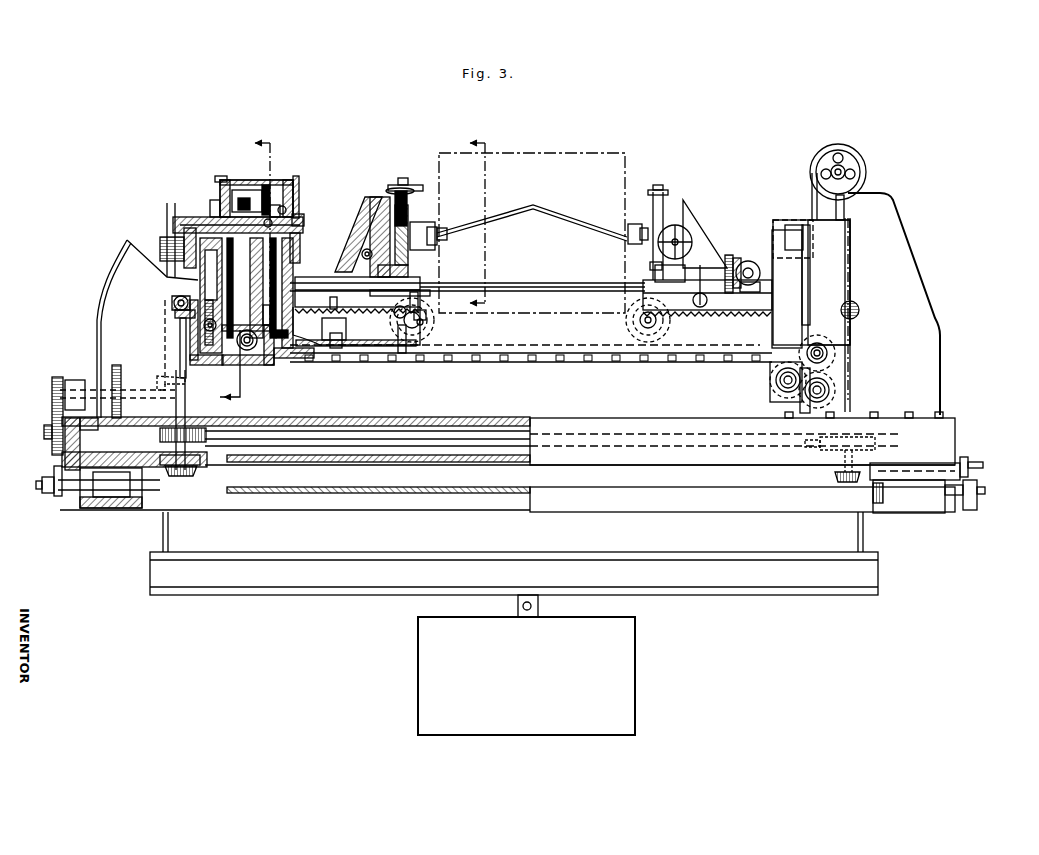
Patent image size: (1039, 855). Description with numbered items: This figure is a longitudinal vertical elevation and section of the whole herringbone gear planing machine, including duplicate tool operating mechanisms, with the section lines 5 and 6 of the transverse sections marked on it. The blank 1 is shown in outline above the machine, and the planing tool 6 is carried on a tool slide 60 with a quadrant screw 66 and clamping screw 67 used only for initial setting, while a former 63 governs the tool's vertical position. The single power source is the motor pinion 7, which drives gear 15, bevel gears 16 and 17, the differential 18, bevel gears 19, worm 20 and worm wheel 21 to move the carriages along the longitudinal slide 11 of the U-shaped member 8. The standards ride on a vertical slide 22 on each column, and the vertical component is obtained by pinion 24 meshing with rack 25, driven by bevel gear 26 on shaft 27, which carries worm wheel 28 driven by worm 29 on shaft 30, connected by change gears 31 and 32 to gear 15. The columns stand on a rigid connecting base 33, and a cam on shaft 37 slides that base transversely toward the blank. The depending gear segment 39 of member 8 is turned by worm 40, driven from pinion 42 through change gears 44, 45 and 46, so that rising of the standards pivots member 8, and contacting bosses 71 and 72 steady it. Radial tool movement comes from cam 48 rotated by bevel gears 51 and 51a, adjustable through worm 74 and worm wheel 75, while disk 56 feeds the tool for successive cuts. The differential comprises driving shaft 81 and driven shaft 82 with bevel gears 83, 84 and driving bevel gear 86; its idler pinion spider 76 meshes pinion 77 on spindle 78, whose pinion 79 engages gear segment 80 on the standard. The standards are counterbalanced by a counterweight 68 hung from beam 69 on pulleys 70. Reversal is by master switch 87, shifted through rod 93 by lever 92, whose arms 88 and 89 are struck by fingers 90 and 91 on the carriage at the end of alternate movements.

The blank 1 is at (500, 165).
The slide 5 is at (242, 268).
The planing tool 6 is at (445, 226).
The pinion 7 is at (100, 405).
The base 8 is at (779, 289).
The longitudinal slide 11 is at (448, 283).
The gear 15 is at (110, 370).
The bevel gear 16 is at (158, 378).
The bevel gear 17 is at (190, 232).
The differential gearing 18 is at (296, 205).
The bevel gears 19 is at (283, 358).
The worm 20 is at (414, 330).
The worm wheel 21 is at (430, 330).
The vertical slide 22 is at (812, 205).
The pinion 24 is at (174, 300).
The rack 25 is at (182, 325).
The bevel gear 26 is at (175, 313).
The shaft 27 is at (176, 340).
The worm wheel 28 is at (178, 439).
The worm 29 is at (190, 440).
The shaft 30 is at (278, 440).
The change gear 31 is at (52, 385).
The change gear 32 is at (45, 436).
The connecting base 33 is at (545, 421).
The shaft 37 is at (118, 488).
The gear segment 39 is at (265, 350).
The worm 40 is at (248, 350).
The pinion 42 is at (210, 330).
The change gear 44 is at (818, 342).
The change gear 45 is at (805, 400).
The change gear 46 is at (775, 383).
The cam 48 is at (682, 282).
The bevel gear 51 is at (730, 256).
The bevel gear 51a is at (760, 274).
The disk 56 is at (706, 302).
The tool slide 60 is at (365, 240).
The former 63 is at (652, 266).
The quadrant screw 66 is at (404, 195).
The clamping screw 67 is at (433, 228).
The counterweight 68 is at (526, 665).
The beam 69 is at (514, 553).
The pulleys 70 is at (850, 148).
The boss 71 is at (263, 318).
The boss 72 is at (276, 334).
The worm 74 is at (752, 258).
The worm wheel 75 is at (740, 283).
The idler pinion spider 76 is at (275, 210).
The pinion 77 is at (265, 188).
The spindle 78 is at (238, 185).
The pinion 79 is at (220, 178).
The gear segment 80 is at (218, 204).
The driving shaft 81 is at (195, 215).
The driven shaft 82 is at (300, 250).
The bevel gear 83 is at (285, 210).
The bevel gear 84 is at (300, 218).
The driving bevel gear 86 is at (270, 220).
The master switch 87 is at (334, 329).
The arm 88 is at (396, 286).
The arm 89 is at (426, 312).
The finger 90 is at (412, 300).
The finger 91 is at (303, 305).
The lever 92 is at (400, 352).
The rod 93 is at (360, 340).